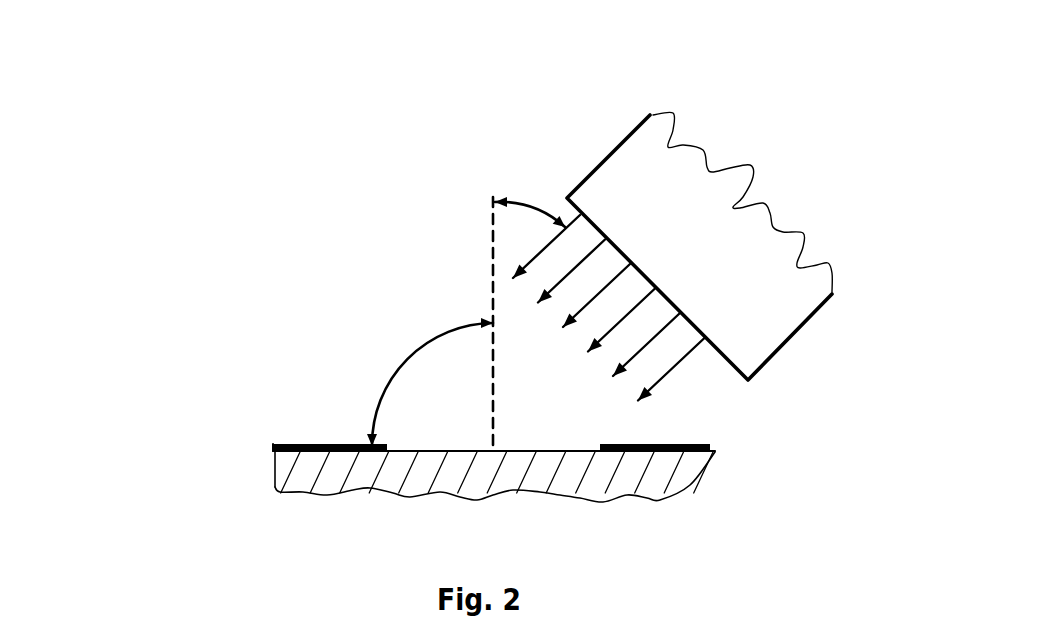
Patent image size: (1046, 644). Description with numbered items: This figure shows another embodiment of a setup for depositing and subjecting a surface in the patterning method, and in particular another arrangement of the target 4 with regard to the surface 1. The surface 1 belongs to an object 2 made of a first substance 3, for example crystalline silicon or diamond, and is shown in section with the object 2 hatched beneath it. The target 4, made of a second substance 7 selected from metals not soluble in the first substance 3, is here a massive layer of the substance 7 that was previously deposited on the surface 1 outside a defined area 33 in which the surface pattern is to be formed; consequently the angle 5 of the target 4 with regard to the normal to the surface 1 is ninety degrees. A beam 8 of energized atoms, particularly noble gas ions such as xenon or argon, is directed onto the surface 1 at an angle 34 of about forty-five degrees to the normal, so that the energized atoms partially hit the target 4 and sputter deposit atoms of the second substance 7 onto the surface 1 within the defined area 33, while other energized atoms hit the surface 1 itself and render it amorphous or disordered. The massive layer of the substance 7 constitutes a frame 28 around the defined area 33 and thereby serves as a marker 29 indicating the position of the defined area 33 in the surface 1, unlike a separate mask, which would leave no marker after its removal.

The surface 1 is at (398, 445).
The object 2 is at (293, 470).
The first substance 3 is at (290, 480).
The target 4 is at (610, 452).
The angle 5 is at (393, 372).
The second substance 7 is at (638, 452).
The beam 8 is at (533, 237).
The frame 28 is at (283, 444).
The marker 29 is at (272, 447).
The defined area 33 is at (378, 445).
The angle 34 is at (532, 203).